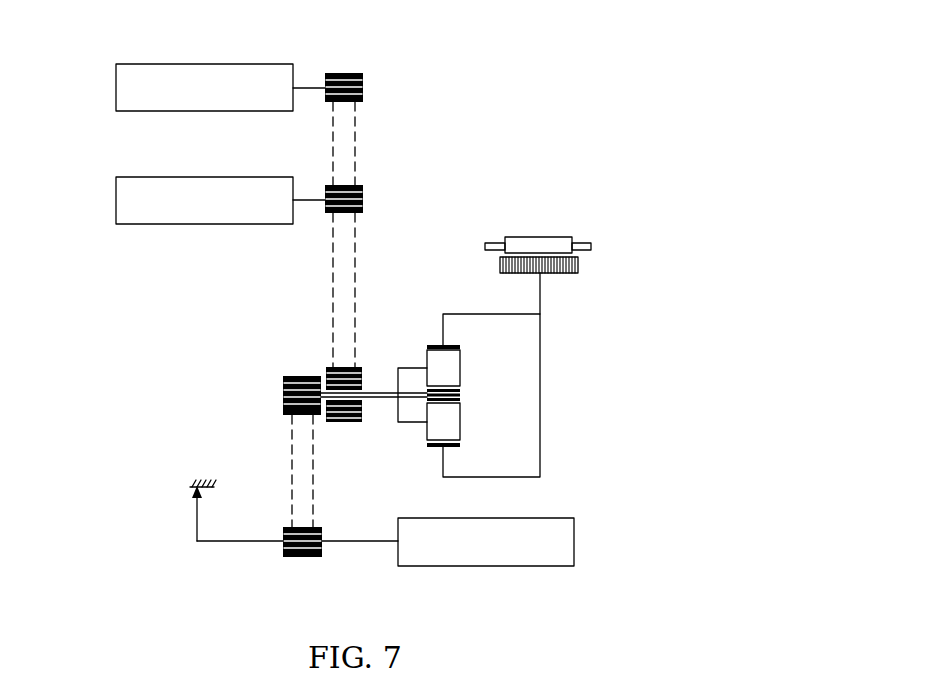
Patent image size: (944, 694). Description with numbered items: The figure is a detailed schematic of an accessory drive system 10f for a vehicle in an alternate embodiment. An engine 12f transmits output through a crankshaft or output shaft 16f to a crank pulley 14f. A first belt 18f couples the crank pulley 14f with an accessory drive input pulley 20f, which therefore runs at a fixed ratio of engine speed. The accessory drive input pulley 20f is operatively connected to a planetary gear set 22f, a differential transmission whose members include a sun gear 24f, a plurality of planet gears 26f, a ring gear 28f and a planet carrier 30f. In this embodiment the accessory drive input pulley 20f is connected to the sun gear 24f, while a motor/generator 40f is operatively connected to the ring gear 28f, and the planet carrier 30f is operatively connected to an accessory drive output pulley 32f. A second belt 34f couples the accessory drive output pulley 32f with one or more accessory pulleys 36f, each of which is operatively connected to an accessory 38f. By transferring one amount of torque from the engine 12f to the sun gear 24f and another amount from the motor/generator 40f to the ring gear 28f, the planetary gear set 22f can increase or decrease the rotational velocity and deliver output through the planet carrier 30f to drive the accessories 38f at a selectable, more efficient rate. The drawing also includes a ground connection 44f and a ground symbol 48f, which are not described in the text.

The accessory drive system 10f is at (553, 131).
The engine 12f is at (540, 566).
The crank pulley 14f is at (296, 557).
The output shaft 16f is at (380, 545).
The first belt 18f is at (291, 467).
The accessory drive input pulley 20f is at (283, 385).
The planetary gear set 22f is at (553, 435).
The sun gear 24f is at (461, 390).
The planet gears 26f is at (440, 365).
The ring gear 28f is at (437, 346).
The planet carrier 30f is at (412, 422).
The accessory drive output pulley 32f is at (337, 423).
The second belt 34f is at (362, 268).
The accessory pulleys 36f is at (350, 73).
The accessories 38f is at (126, 63).
The motor/generator 40f is at (563, 236).
The ground connection 44f is at (194, 494).
The ground symbol 48f is at (200, 470).